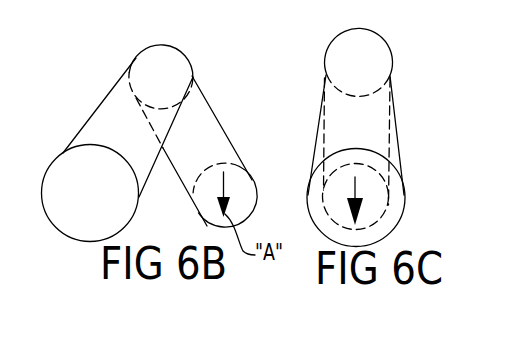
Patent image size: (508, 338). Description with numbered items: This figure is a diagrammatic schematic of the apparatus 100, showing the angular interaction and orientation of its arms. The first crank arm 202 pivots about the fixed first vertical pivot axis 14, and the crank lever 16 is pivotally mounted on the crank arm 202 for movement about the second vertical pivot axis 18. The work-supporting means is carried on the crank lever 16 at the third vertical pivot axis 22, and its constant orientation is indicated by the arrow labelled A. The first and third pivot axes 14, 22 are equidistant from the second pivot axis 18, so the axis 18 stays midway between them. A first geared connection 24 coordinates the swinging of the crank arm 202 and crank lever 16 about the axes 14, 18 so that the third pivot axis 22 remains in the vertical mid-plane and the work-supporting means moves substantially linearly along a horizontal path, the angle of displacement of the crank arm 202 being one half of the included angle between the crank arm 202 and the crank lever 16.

In FIG. 6B, the first vertical pivot axis 14 is at (91, 194).
In FIG. 6C, the first vertical pivot axis 14 is at (358, 196).
In FIG. 6B, the crank lever 16 is at (212, 110).
In FIG. 6C, the crank lever 16 is at (388, 207).
In FIG. 6B, the second vertical pivot axis 18 is at (160, 77).
In FIG. 6C, the second vertical pivot axis 18 is at (357, 63).
In FIG. 6B, the third vertical pivot axis 22 is at (236, 172).
In FIG. 6B, the first geared connection 24 is at (208, 0).
In FIG. 6C, the apparatus 100 is at (310, 6).
In FIG. 6B, the first crank arm 202 is at (94, 107).
In FIG. 6C, the first crank arm 202 is at (318, 110).